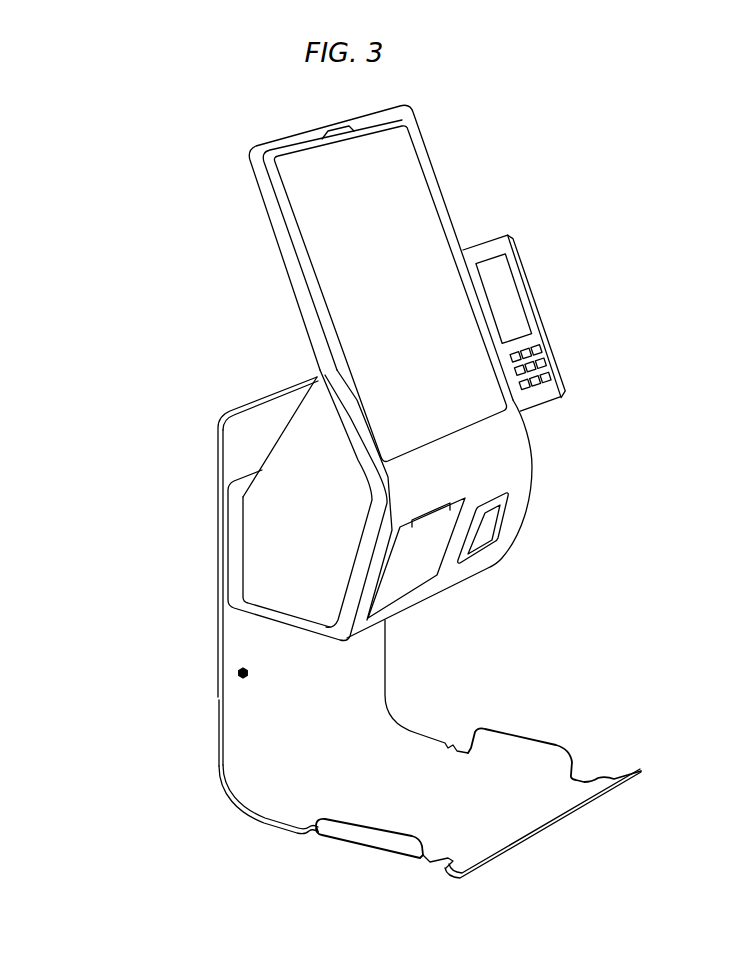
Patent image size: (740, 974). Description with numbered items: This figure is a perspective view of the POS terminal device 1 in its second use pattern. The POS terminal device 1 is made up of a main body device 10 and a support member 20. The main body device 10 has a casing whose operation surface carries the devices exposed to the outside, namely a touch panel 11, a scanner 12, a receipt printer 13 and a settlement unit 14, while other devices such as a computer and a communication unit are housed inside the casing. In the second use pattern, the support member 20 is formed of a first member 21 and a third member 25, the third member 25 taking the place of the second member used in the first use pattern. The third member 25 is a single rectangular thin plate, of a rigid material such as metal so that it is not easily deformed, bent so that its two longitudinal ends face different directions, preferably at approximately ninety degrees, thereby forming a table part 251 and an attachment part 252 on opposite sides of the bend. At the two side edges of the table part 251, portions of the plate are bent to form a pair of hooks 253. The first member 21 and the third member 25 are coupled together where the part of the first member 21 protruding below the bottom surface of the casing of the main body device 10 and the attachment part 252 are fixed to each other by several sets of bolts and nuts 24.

The POS terminal device 1 is at (190, 215).
The main body device 10 is at (522, 200).
The touch panel 11 is at (412, 172).
The scanner 12 is at (478, 537).
The receipt printer 13 is at (435, 577).
The settlement unit 14 is at (537, 338).
The support member 20 is at (135, 570).
The first member 21 is at (223, 438).
The nut 24 is at (248, 678).
The third member 25 is at (352, 882).
The table part 251 is at (293, 813).
The attachment part 252 is at (235, 757).
The hook 253 is at (363, 838).